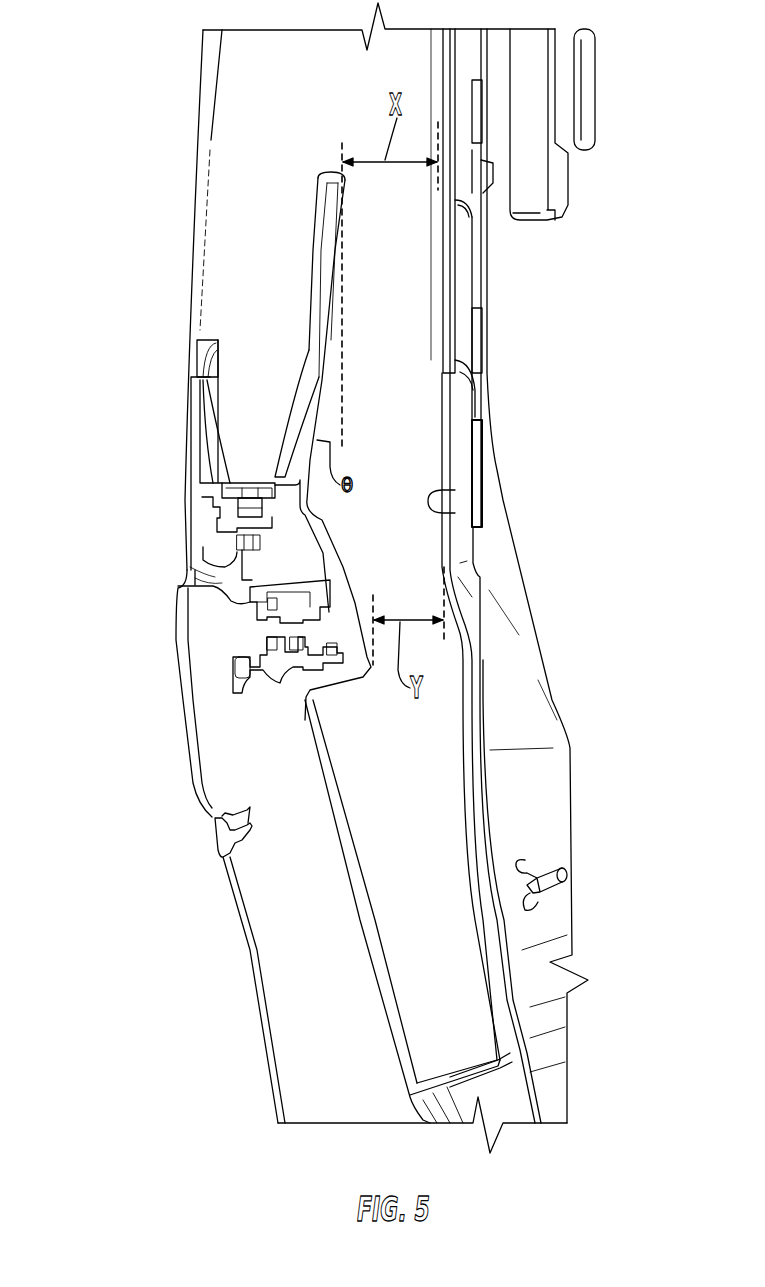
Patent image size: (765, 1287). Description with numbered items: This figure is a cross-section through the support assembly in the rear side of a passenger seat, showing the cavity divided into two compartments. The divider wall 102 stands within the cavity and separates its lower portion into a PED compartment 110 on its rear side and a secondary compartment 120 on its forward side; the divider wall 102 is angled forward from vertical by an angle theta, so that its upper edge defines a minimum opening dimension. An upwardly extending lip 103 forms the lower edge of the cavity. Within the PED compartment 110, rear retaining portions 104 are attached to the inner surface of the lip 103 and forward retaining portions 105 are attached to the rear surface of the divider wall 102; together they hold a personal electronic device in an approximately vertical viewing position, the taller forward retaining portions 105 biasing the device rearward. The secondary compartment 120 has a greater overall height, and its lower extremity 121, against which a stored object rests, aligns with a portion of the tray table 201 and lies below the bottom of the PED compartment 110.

The divider wall 102 is at (327, 230).
The upwardly extending lip 103 is at (193, 387).
The rear retaining portions 104 is at (210, 467).
The forward retaining portions 105 is at (282, 442).
The PED compartment 110 is at (243, 315).
The secondary compartment 120 is at (407, 817).
The lower extremity of the secondary compartment 121 is at (472, 1063).
The tray table 201 is at (207, 715).